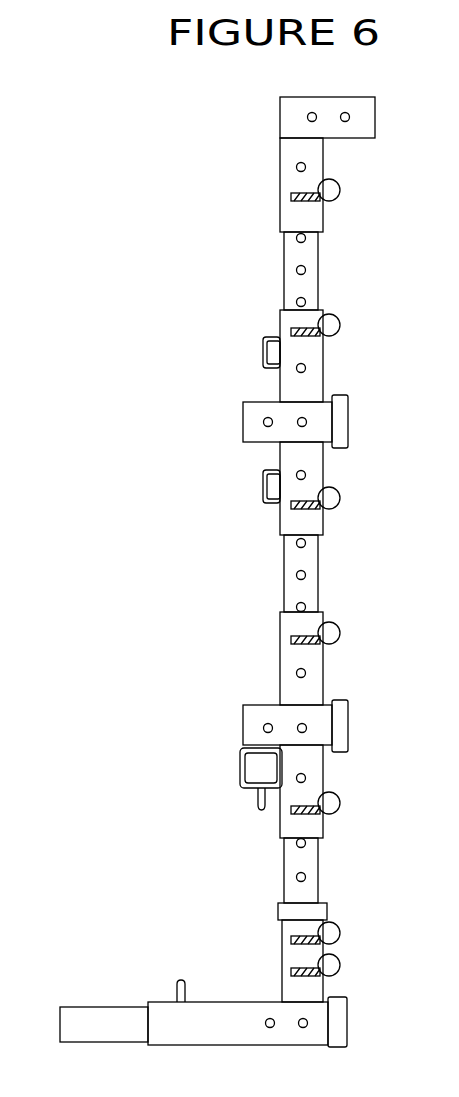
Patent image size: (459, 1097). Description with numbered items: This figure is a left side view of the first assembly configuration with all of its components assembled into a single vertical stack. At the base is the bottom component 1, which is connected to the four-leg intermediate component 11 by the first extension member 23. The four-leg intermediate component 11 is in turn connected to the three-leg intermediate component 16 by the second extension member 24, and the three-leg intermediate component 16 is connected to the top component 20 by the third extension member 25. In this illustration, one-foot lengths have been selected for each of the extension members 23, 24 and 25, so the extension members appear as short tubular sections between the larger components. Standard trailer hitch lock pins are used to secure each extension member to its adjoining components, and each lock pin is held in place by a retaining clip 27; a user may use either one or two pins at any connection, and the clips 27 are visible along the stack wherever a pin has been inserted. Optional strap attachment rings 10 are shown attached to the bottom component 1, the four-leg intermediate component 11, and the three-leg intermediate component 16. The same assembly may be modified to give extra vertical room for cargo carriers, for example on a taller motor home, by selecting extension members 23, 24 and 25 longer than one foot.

The bottom component 1 is at (130, 1000).
The strap attachment ring 10 is at (263, 357).
The four-leg intermediate component 11 is at (241, 727).
The three-leg intermediate component 16 is at (241, 424).
The top component 20 is at (293, 152).
The first extension member 23 is at (293, 863).
The second extension member 24 is at (296, 565).
The third extension member 25 is at (292, 258).
The retaining clip 27 is at (340, 182).